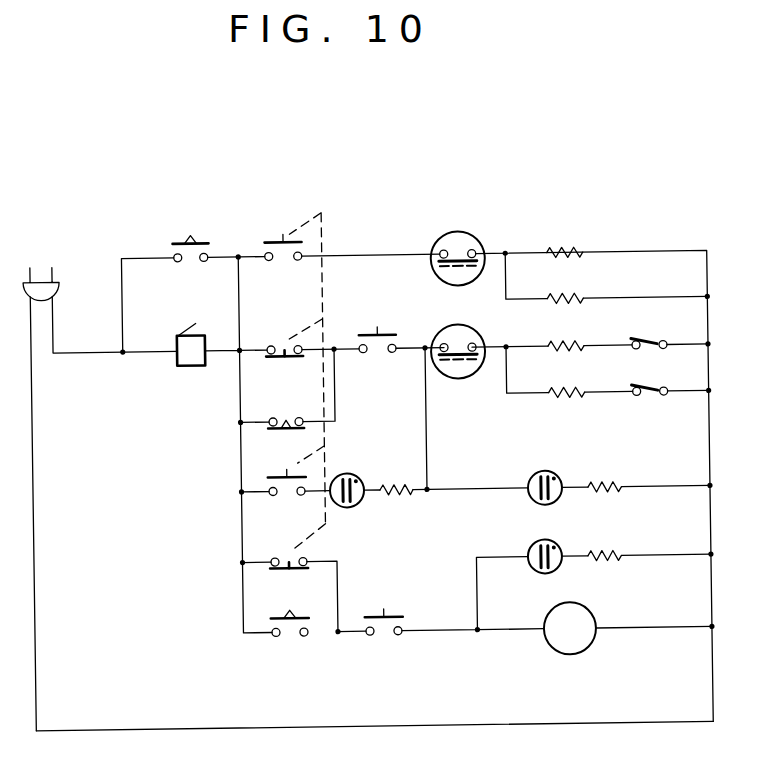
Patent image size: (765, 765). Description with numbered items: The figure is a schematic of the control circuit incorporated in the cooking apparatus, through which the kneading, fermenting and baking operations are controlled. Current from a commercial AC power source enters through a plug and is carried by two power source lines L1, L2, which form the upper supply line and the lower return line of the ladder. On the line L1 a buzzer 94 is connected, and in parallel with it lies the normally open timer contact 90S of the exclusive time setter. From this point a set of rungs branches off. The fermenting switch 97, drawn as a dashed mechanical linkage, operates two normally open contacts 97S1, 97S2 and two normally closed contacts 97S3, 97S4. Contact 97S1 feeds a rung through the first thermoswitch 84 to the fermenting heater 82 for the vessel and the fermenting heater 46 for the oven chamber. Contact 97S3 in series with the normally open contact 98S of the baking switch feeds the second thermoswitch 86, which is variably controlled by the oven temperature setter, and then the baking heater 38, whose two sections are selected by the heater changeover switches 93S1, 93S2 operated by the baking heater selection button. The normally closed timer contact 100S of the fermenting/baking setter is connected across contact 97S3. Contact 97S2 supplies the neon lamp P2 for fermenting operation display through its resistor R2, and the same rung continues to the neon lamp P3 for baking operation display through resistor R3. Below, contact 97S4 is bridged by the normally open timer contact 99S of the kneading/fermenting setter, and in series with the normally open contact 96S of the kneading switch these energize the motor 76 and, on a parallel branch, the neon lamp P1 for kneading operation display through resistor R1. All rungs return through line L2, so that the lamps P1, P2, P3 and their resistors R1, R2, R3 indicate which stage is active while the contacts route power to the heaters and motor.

The commercial AC power source AC is at (40, 269).
The power source line L1 is at (78, 354).
The power source line L2 is at (100, 724).
The normally open timer contact 90S is at (193, 258).
The buzzer 94 is at (192, 365).
The fermenting switch 97 is at (327, 280).
The normally open contact of the fermenting switch 97S1 is at (285, 258).
The normally open contact of the fermenting switch 97S2 is at (287, 494).
The normally closed contact of the fermenting switch 97S3 is at (286, 359).
The normally closed contact of the fermenting switch 97S4 is at (280, 570).
The normally open contact of the baking switch 98S is at (379, 352).
The normally closed timer contact 100S is at (271, 430).
The normally open timer contact 99S is at (290, 635).
The normally open contact of the kneading switch 96S is at (384, 635).
The first thermoswitch 84 is at (458, 240).
The second thermoswitch 86 is at (470, 339).
The fermenting heater 82 is at (564, 246).
The fermenting heater 46 is at (563, 297).
The baking heater 38 is at (565, 344).
The heater changeover switch 93S1 is at (645, 343).
The heater changeover switch 93S2 is at (646, 391).
The resistor R1 is at (600, 553).
The resistor R2 is at (391, 481).
The resistor R3 is at (601, 481).
The neon lamp P1 is at (534, 574).
The neon lamp P2 is at (340, 506).
The neon lamp P3 is at (536, 504).
The motor 76 is at (584, 645).